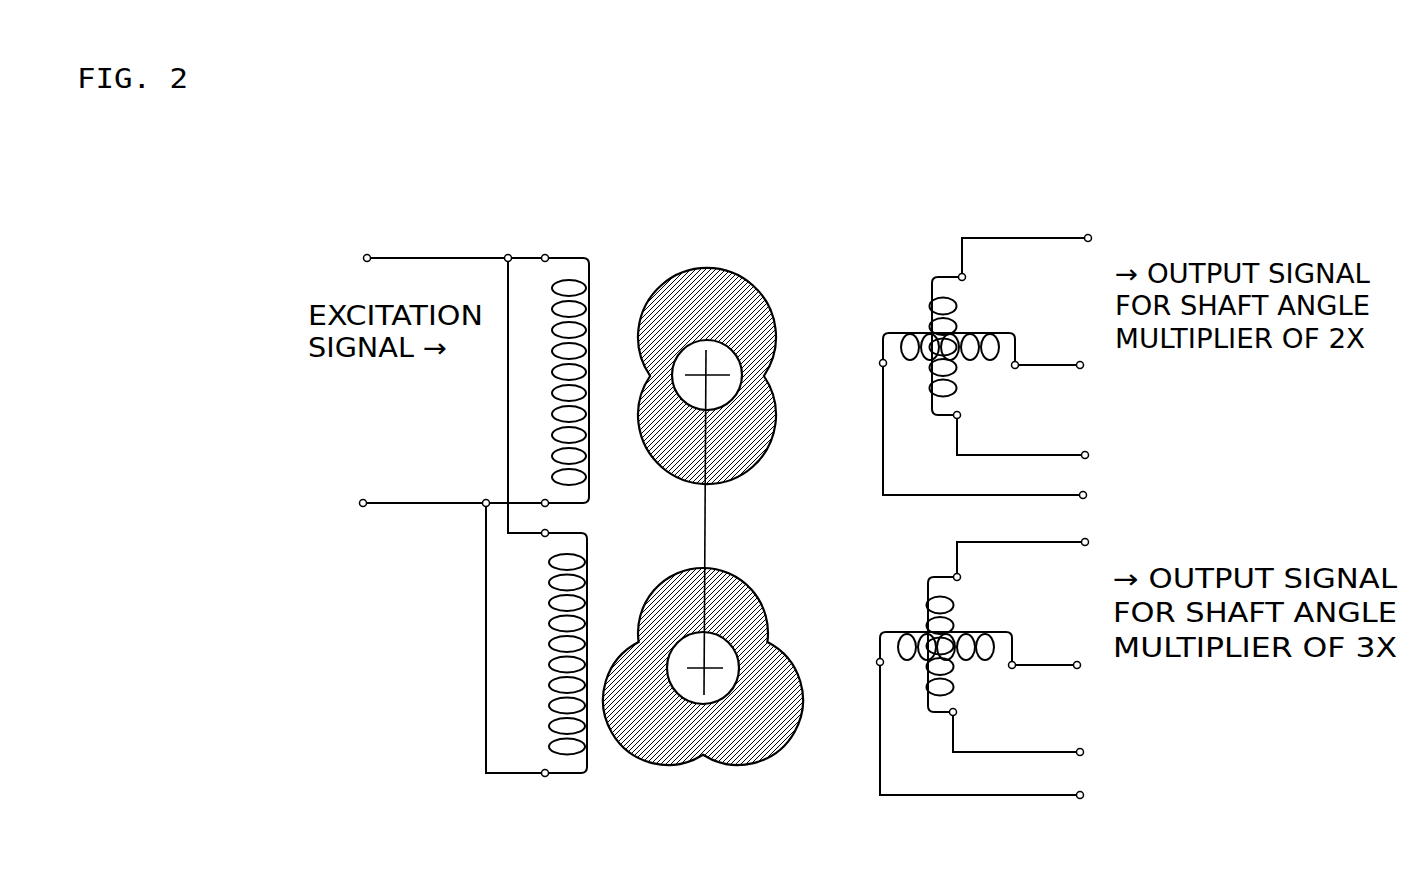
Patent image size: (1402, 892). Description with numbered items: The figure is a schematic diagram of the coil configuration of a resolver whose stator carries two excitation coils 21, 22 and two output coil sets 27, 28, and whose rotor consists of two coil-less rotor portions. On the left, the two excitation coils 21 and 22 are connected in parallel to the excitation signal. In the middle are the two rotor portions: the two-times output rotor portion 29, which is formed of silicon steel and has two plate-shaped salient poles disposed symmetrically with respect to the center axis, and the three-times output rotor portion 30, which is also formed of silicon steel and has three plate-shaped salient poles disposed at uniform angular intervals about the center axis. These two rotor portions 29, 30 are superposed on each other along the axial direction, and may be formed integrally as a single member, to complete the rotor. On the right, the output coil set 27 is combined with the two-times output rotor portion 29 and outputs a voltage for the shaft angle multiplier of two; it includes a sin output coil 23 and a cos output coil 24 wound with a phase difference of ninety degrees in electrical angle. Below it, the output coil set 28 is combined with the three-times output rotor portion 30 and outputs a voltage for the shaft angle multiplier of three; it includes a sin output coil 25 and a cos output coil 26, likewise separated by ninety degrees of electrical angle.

The excitation coil 21 is at (580, 246).
The excitation coil 22 is at (596, 580).
The sin output coil 23 is at (986, 343).
The cos output coil 24 is at (963, 379).
The sin output coil 25 is at (985, 635).
The cos output coil 26 is at (959, 672).
The output coil set 27 is at (983, 336).
The output coil set 28 is at (973, 659).
The 2× output rotor portion 29 is at (766, 270).
The 3× output rotor portion 30 is at (763, 566).